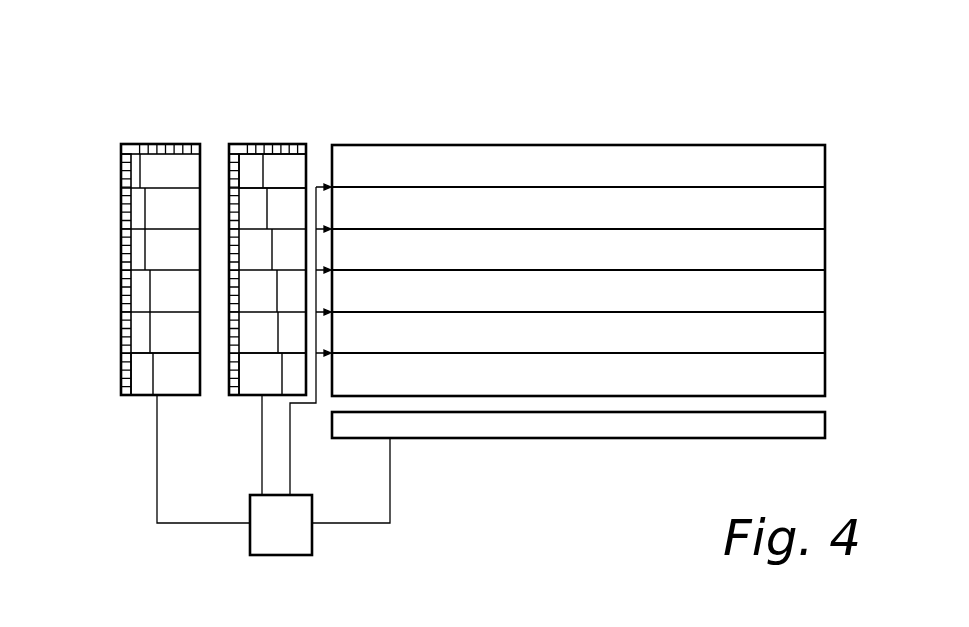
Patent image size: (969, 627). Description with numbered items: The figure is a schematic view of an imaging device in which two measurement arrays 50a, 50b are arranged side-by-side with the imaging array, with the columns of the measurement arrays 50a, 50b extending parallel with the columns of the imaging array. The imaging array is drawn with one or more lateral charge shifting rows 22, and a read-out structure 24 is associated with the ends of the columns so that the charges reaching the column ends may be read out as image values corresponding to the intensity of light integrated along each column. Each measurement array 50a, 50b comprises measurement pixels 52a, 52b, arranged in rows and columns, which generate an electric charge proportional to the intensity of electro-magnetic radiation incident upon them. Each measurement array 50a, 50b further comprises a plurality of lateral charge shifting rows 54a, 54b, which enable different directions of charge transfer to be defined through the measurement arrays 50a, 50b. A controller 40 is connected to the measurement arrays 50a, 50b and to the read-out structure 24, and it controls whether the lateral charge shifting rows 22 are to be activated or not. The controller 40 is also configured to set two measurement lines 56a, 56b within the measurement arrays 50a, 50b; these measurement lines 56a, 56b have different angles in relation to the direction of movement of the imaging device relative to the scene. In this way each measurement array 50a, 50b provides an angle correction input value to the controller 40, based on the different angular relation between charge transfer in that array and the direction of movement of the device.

The measurement array 50a is at (137, 234).
The measurement array 50b is at (317, 245).
The measurement pixels 52a is at (170, 145).
The measurement pixels 52b is at (302, 145).
The lateral charge shifting rows 54a is at (140, 190).
The lateral charge shifting rows 54b is at (293, 187).
The measurement line 56a is at (152, 375).
The measurement line 56b is at (275, 372).
The lateral charge shifting rows 22 is at (826, 187).
The read-out structure 24 is at (810, 430).
The controller 40 is at (250, 537).